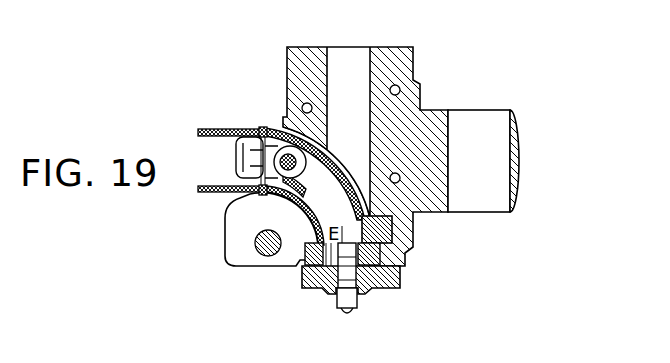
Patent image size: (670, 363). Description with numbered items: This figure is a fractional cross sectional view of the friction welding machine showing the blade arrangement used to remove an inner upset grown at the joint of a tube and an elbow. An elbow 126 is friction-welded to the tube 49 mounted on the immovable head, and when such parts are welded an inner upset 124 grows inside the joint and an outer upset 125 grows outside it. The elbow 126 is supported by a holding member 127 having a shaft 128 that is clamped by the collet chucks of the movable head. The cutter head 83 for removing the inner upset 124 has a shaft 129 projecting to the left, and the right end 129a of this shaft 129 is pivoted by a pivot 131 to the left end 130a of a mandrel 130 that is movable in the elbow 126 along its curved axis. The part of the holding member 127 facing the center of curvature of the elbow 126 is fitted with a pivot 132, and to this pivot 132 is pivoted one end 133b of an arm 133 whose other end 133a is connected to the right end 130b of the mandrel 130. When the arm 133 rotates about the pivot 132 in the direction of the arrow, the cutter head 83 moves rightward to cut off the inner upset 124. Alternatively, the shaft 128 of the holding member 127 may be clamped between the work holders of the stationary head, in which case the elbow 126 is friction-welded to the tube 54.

The holding member 127 is at (397, 58).
The shaft 128 is at (482, 120).
The tube 49 is at (224, 140).
The tube 54 is at (235, 130).
The cutter head 83 is at (237, 158).
The inner upset 124 is at (264, 192).
The outer upset 125 is at (260, 128).
The right end of shaft 129a is at (283, 118).
The shaft 129 is at (278, 194).
The elbow 126 is at (341, 158).
The mandrel 130 is at (350, 213).
The left end of mandrel 130a is at (324, 130).
The right end of mandrel 130b is at (345, 236).
The pivot 131 is at (312, 194).
The pivot 132 is at (266, 249).
The arm 133 is at (314, 288).
The other end of arm 133a is at (372, 290).
The one end of arm 133b is at (272, 278).